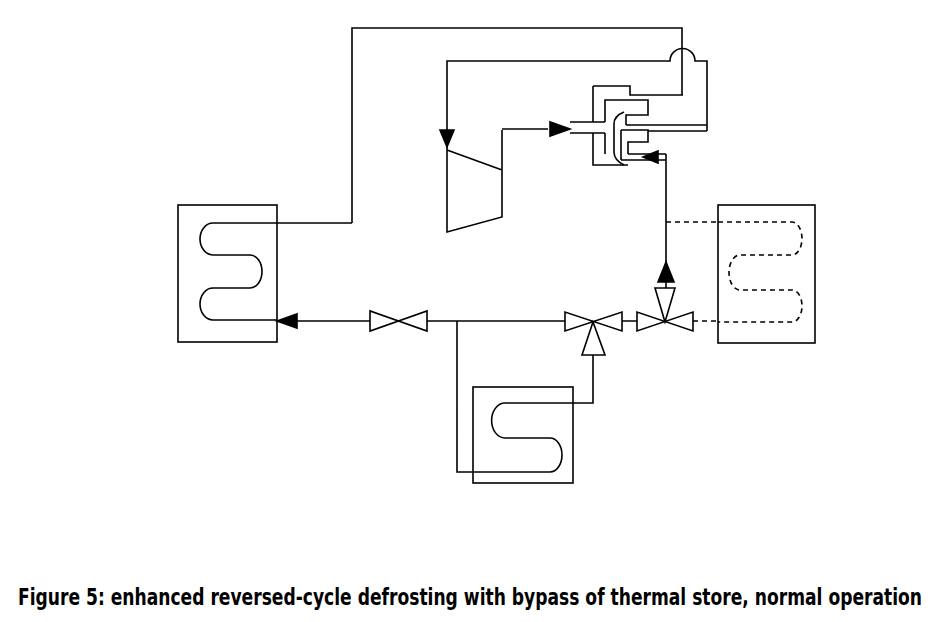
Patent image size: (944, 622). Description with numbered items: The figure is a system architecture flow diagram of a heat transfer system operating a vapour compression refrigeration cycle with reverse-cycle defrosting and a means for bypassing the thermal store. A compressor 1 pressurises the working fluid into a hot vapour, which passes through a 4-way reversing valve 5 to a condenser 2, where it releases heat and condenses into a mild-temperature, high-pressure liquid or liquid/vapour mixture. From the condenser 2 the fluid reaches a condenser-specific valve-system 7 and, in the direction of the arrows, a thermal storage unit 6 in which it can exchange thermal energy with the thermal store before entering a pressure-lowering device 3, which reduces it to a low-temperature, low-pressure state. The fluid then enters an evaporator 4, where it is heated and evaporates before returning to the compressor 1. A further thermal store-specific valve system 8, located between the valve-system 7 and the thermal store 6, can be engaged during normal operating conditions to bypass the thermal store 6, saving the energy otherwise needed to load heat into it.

The compressor 1 is at (474, 181).
The condenser 2 is at (766, 274).
The pressure-lowering device 3 is at (398, 304).
The evaporator 4 is at (265, 273).
The 4-way reversing valve 5 is at (626, 145).
The thermal storage unit 6 is at (523, 417).
The valve-system 7 is at (665, 326).
The thermal store-specific valve system 8 is at (593, 318).